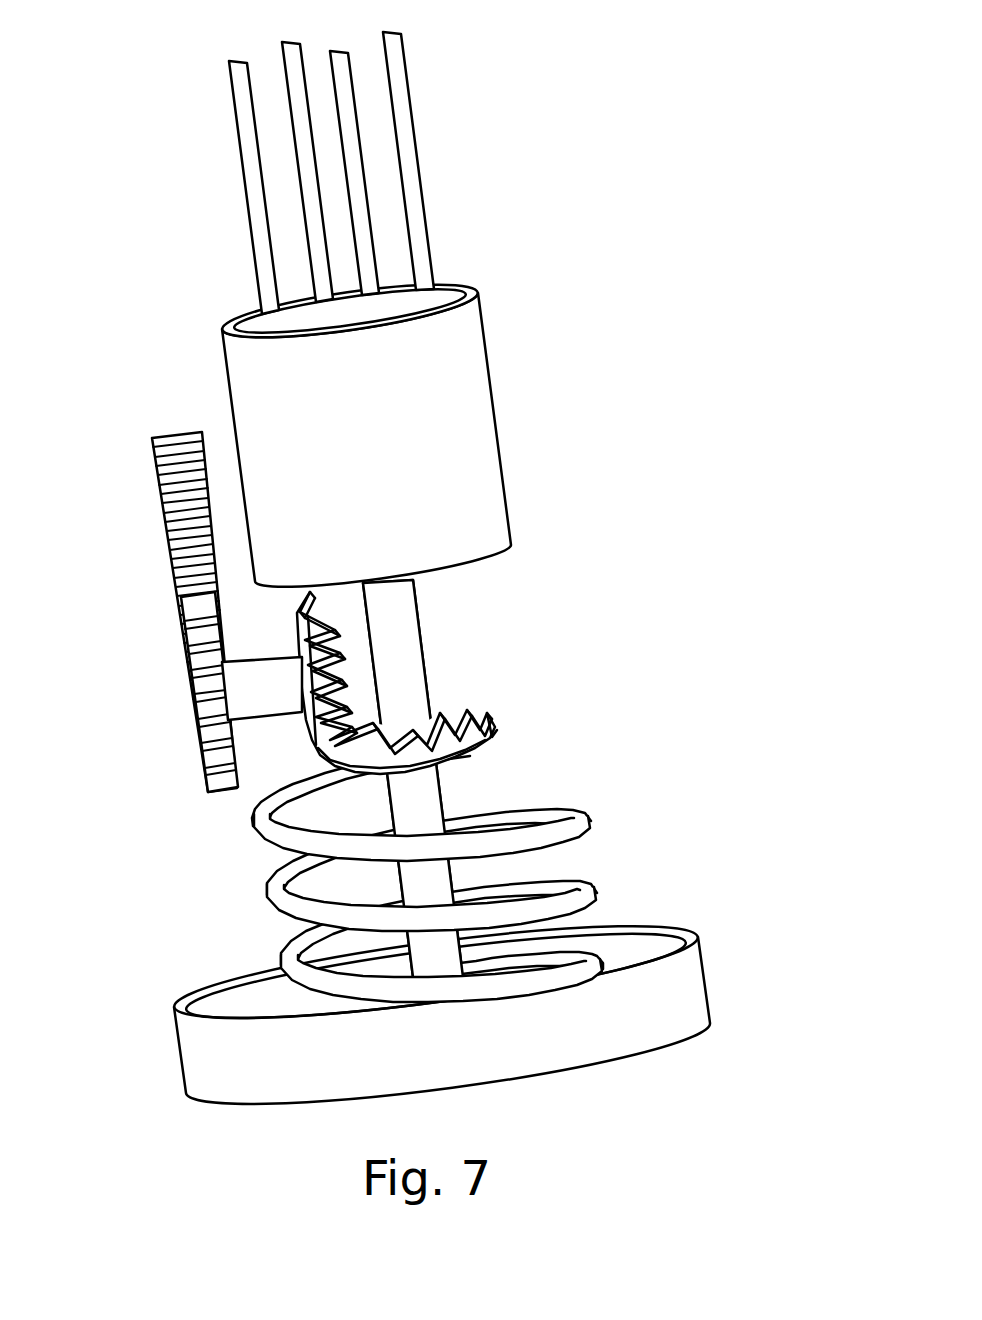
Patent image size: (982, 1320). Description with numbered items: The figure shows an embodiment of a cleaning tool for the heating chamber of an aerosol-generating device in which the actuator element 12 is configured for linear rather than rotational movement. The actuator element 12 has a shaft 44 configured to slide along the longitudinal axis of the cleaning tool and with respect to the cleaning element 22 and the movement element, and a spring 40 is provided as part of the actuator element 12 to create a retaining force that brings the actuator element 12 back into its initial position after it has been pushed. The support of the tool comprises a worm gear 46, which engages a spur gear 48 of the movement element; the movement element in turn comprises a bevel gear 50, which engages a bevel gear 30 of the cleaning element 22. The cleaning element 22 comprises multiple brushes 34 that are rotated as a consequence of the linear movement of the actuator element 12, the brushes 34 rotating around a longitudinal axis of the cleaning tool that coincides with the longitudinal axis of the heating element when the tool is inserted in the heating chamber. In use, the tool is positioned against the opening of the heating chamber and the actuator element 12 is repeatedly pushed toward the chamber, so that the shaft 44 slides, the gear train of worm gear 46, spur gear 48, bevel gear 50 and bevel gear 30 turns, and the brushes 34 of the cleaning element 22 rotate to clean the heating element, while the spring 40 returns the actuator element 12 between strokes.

The actuator element 12 is at (673, 988).
The cleaning element 22 is at (467, 379).
The bevel gear 30 is at (480, 717).
The brushes 34 is at (400, 80).
The spring 40 is at (302, 960).
The shaft 44 is at (437, 887).
The worm gear 46 is at (177, 514).
The spur gear 48 is at (217, 713).
The bevel gear 50 is at (330, 657).